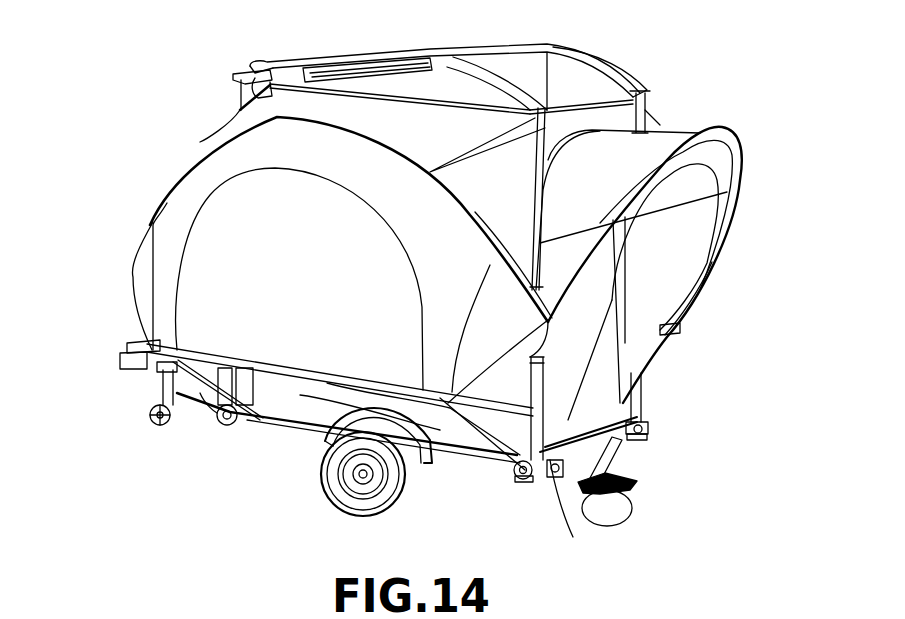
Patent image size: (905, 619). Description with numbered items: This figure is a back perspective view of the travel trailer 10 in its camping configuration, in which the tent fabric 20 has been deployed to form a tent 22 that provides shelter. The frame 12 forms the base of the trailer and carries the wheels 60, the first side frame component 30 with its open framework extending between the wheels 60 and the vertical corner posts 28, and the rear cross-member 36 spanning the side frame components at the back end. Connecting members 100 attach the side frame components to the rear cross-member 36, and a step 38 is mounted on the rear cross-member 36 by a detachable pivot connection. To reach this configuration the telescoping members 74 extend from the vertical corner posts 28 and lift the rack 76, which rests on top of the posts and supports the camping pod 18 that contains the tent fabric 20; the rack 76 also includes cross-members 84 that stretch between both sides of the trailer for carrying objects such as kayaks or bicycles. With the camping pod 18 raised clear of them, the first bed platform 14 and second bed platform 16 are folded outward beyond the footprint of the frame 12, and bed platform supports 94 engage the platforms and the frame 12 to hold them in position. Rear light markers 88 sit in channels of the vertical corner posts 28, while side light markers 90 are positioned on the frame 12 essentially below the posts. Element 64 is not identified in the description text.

The travel trailer 10 is at (176, 46).
The frame 12 is at (283, 428).
The first bed platform 14 is at (143, 380).
The second bed platform 16 is at (668, 334).
The camping pod 18 is at (596, 77).
The tent fabric 20 is at (162, 207).
The tent 22 is at (182, 172).
The vertical corner posts 28 is at (641, 413).
The first side frame component 30 is at (327, 430).
The rear cross-member 36 is at (627, 440).
The step 38 is at (632, 488).
The wheels 60 is at (360, 475).
The canopy top 64 is at (540, 62).
The telescoping members 74 is at (648, 116).
The rack 76 is at (266, 60).
The cross-members 84 is at (378, 57).
The rear light markers 88 is at (641, 388).
The side light markers 90 is at (215, 410).
The bed platform supports 94 is at (467, 447).
The connecting members 100 is at (643, 442).